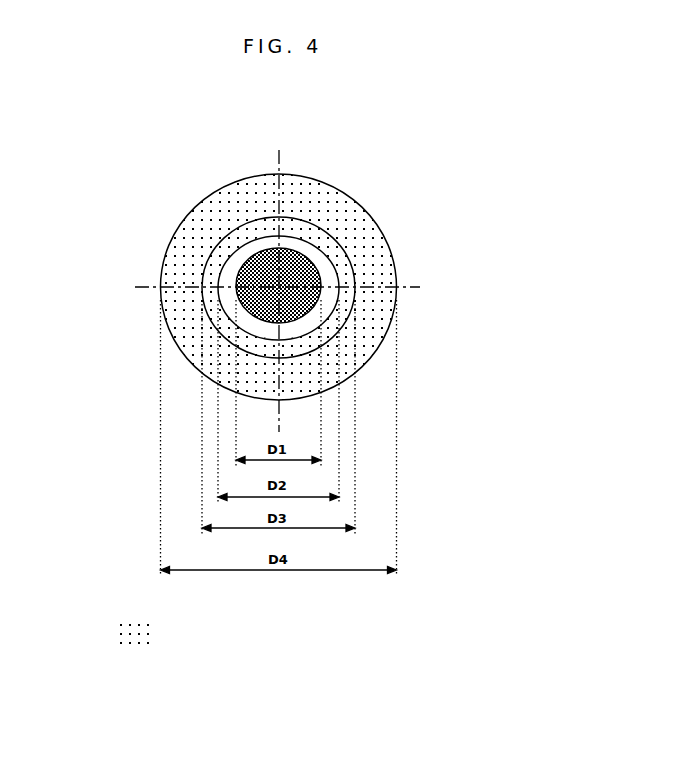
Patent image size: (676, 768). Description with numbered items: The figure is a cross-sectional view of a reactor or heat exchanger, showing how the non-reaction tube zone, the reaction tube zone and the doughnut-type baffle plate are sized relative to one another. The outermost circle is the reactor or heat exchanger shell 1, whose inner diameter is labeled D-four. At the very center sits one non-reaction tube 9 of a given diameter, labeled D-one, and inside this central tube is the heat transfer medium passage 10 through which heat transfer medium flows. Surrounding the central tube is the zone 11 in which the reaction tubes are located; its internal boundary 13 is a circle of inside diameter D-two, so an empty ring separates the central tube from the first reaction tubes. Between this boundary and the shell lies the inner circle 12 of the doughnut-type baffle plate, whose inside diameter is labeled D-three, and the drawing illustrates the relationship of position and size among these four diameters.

The reactor or heat exchanger shell 1 is at (300, 174).
The non-reaction tube located at central portion 9 is at (253, 310).
The heat transfer medium passage located in central non-reaction tube 10 is at (324, 413).
The zone in which reaction tubes are located 11 is at (230, 208).
The inner circle of doughnut-type baffle plate 12 is at (212, 247).
The internal boundary of zone in which reaction tubes are located 13 is at (220, 292).